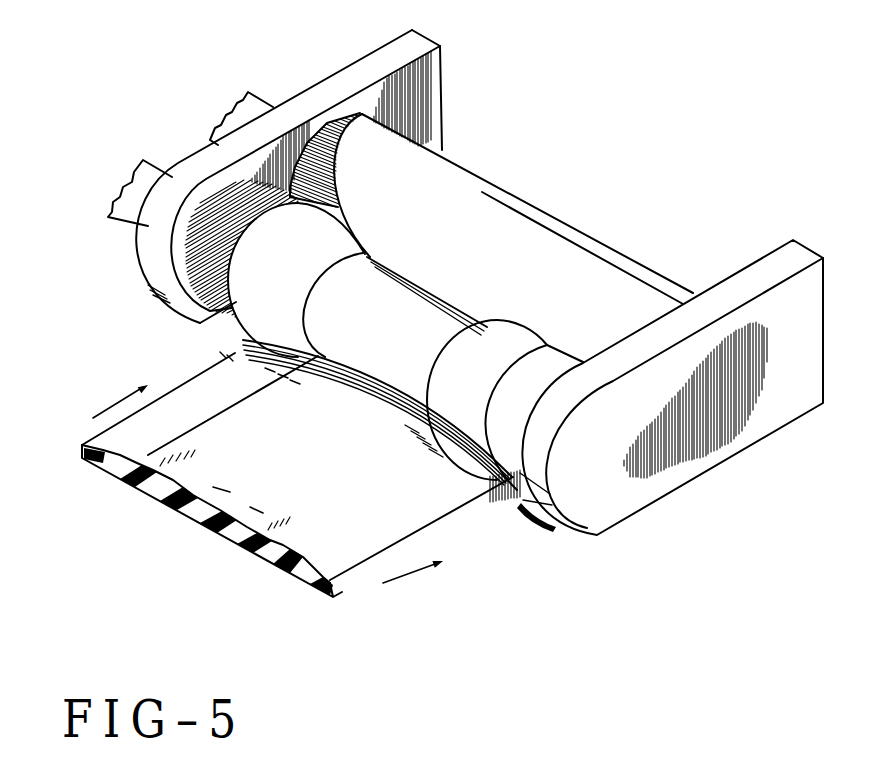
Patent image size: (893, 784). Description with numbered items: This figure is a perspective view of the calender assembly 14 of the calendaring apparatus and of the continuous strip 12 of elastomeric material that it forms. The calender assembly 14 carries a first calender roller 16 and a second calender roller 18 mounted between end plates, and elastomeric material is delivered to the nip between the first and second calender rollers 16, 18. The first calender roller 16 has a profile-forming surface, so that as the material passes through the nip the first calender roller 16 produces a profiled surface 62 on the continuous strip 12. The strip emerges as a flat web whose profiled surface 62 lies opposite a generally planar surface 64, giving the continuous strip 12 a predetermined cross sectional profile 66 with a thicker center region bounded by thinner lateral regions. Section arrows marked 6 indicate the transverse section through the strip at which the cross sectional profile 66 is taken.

The section line 6- 6 is at (280, 474).
The continuous strip 12 is at (417, 520).
The calender assembly 14 is at (358, 75).
The first calender roller 16 is at (175, 307).
The second calender roller 18 is at (488, 218).
The profiled surface 62 is at (235, 354).
The generally planar surface 64 is at (183, 520).
The cross sectional profile 66 is at (263, 552).